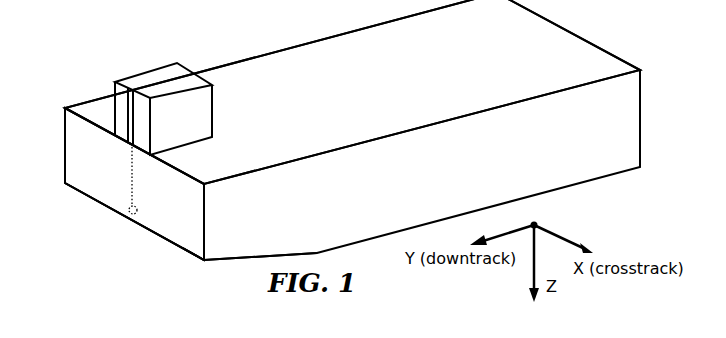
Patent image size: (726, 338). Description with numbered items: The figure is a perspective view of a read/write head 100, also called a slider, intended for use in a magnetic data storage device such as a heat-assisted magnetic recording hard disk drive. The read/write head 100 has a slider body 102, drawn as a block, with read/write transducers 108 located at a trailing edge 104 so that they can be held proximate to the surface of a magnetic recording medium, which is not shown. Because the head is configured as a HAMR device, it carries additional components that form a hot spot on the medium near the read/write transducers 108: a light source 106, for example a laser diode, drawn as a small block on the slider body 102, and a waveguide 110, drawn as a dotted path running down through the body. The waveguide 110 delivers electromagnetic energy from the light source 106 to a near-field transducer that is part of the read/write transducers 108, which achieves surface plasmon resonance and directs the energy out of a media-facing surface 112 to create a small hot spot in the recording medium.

The read/write head 100 is at (600, 21).
The slider body 102 is at (308, 53).
The trailing edge 104 is at (64, 166).
The light source 106 is at (133, 78).
The read/write transducers 108 is at (130, 220).
The waveguide 110 is at (132, 178).
The media-facing surface 112 is at (183, 250).